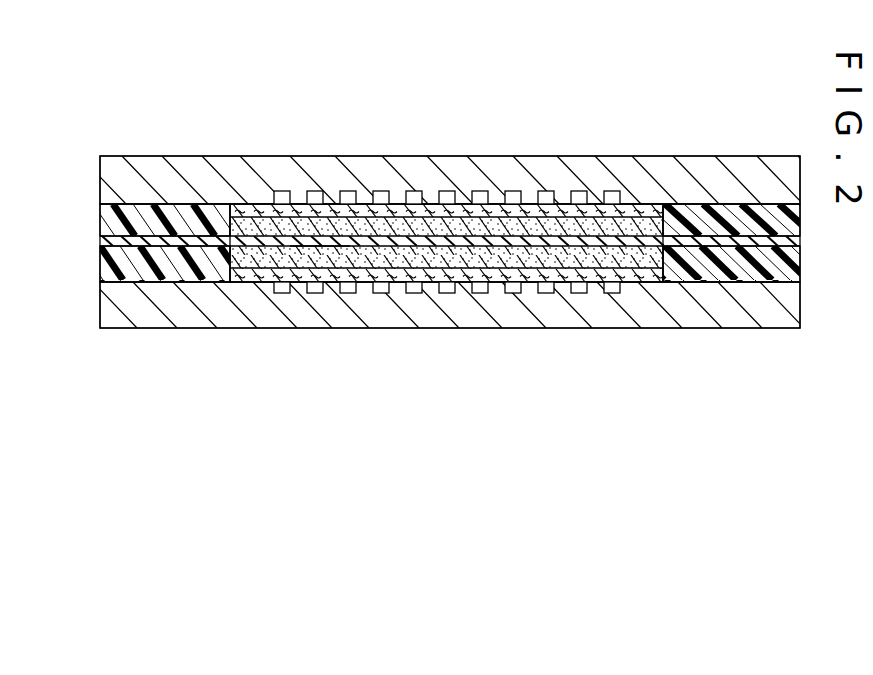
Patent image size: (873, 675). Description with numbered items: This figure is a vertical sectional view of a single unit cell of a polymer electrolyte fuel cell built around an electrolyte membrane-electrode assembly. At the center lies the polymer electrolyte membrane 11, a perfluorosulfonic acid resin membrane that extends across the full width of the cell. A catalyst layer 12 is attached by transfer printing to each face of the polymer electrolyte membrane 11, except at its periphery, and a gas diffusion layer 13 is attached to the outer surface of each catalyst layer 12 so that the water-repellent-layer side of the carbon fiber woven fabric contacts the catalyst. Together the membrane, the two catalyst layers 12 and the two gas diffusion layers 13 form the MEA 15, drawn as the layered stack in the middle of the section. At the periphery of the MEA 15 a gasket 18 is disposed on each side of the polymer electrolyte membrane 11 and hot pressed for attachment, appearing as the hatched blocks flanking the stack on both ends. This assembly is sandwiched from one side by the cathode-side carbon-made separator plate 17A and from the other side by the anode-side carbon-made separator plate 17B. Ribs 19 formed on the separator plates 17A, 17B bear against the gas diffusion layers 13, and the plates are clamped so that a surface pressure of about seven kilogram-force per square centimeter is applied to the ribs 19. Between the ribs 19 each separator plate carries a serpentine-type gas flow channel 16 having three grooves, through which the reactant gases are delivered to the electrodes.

The polymer electrolyte membrane 11 is at (712, 238).
The catalyst layer 12 is at (565, 223).
The gas diffusion layer 13 is at (512, 200).
The MEA 15 is at (688, 92).
The gas flow channel 16 is at (380, 193).
The cathode-side separator plate 17A is at (190, 312).
The anode-side separator plate 17B is at (203, 173).
The gasket 18 is at (128, 260).
The rib 19 is at (333, 284).